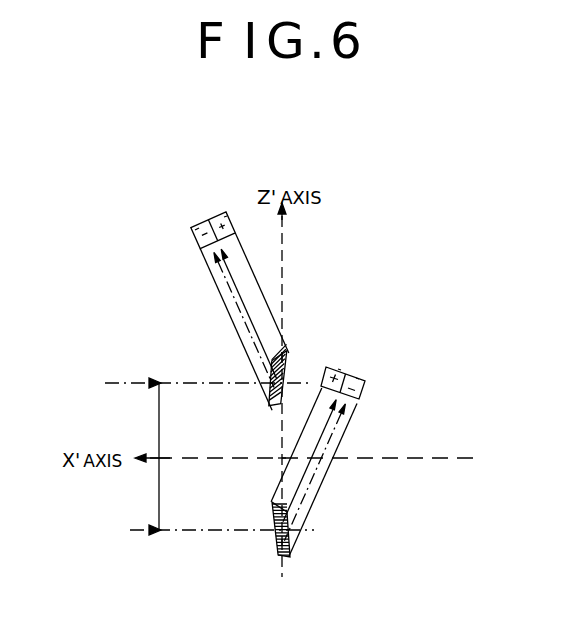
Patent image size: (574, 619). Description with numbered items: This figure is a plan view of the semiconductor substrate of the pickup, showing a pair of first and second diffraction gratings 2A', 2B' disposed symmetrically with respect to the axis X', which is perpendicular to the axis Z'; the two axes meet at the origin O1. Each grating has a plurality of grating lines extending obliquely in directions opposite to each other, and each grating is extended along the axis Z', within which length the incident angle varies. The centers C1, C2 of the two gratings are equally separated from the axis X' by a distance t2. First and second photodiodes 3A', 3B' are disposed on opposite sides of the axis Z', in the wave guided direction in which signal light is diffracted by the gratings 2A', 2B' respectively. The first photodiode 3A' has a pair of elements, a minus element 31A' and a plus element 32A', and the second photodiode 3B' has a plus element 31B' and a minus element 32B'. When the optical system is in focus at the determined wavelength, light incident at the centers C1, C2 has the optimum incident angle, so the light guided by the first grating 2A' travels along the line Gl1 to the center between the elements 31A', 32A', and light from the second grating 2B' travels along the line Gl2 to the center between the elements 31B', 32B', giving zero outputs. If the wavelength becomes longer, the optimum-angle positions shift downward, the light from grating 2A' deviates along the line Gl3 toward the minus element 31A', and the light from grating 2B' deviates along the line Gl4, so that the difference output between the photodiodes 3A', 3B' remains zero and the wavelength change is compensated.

The first photodiode 3A' is at (196, 178).
The minus element of first photodiode 31A' is at (164, 189).
The plus element of first photodiode 32A' is at (230, 182).
The first diffraction grating 2A' is at (249, 382).
The second photodiode 3B' is at (406, 361).
The plus element of second photodiode 31B' is at (385, 346).
The minus element of second photodiode 32B' is at (394, 365).
The second diffraction grating 2B' is at (254, 539).
The line of signal light guided by first grating Gl1 is at (240, 288).
The line of signal light guided by second grating Gl2 is at (303, 476).
The deviated line of signal light from first grating Gl3 is at (216, 280).
The deviated line of signal light from second grating Gl4 is at (342, 431).
The center of first grating C1 is at (293, 360).
The center of second grating C2 is at (290, 542).
The origin of axes O1 is at (281, 458).
The distance t2 is at (159, 456).